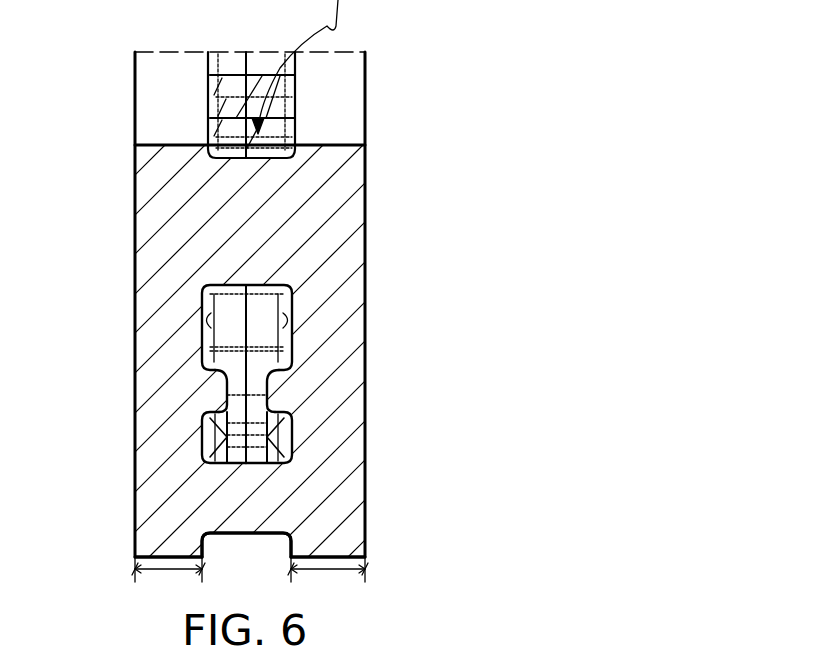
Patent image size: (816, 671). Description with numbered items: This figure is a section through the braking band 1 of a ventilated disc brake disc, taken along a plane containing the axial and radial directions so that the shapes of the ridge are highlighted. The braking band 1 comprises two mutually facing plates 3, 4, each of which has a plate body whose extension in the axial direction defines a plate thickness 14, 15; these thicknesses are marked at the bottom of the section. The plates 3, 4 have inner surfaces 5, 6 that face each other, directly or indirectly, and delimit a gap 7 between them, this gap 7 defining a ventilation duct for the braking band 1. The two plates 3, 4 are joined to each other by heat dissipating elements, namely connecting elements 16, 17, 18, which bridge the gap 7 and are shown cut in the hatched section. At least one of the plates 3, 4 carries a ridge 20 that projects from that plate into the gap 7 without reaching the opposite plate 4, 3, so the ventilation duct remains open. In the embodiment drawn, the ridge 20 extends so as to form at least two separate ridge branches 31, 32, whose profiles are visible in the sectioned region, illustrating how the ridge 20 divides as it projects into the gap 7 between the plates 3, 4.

The braking band 1 is at (398, 258).
The plate 3 is at (337, 113).
The plate 4 is at (172, 129).
The inner surface 5 is at (282, 338).
The inner surface 6 is at (198, 341).
The gap 7 is at (248, 548).
The plate thickness 14 is at (330, 576).
The plate thickness 15 is at (168, 572).
The connecting element 16 is at (267, 493).
The connecting element 17 is at (210, 348).
The connecting element 18 is at (253, 212).
The ridge 20 is at (222, 388).
The ridge branch 31 is at (288, 424).
The ridge branch 32 is at (222, 424).